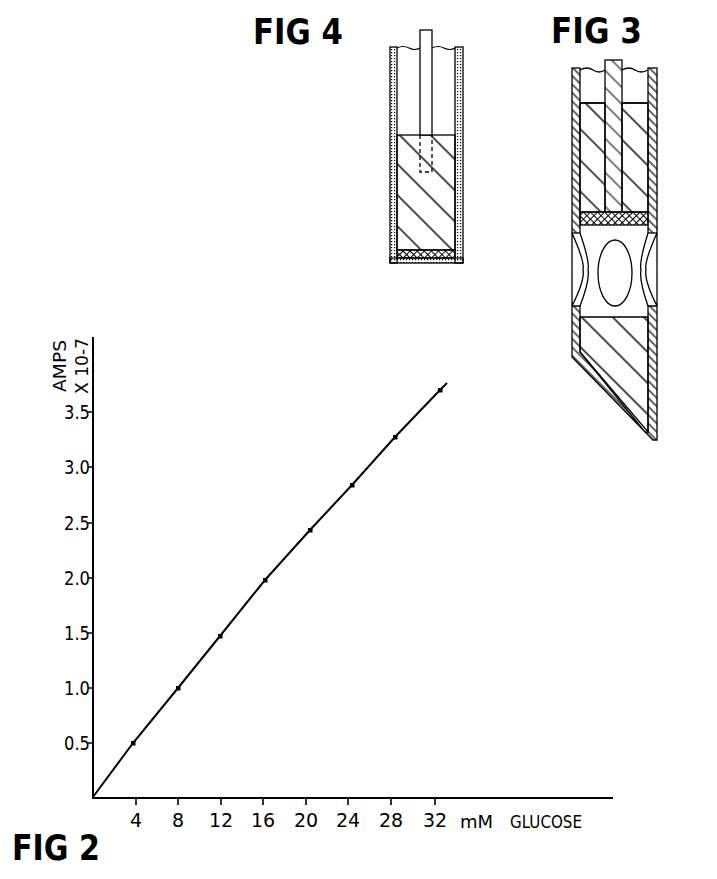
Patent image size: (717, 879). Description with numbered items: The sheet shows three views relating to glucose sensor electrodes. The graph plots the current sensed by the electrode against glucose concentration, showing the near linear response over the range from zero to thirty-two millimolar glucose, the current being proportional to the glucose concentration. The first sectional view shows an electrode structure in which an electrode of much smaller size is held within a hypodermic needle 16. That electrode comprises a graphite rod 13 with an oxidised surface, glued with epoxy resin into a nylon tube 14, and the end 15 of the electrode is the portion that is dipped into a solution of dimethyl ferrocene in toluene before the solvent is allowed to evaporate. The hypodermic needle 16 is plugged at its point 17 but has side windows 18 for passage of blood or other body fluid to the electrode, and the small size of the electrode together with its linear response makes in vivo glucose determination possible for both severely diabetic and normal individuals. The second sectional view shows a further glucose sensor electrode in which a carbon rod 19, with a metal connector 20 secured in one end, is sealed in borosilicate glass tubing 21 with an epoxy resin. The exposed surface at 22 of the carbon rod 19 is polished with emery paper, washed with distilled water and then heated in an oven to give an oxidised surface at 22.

In FIG. 3, the graphite rod 13 is at (618, 82).
In FIG. 3, the nylon tube 14 is at (637, 158).
In FIG. 3, the end of the electrode 15 is at (633, 232).
In FIG. 3, the hypodermic needle 16 is at (565, 83).
In FIG. 3, the point 17 is at (633, 363).
In FIG. 3, the side windows 18 is at (644, 282).
In FIG. 4, the carbon rod 19 is at (433, 218).
In FIG. 4, the metal connector 20 is at (425, 72).
In FIG. 4, the glass tubing 21 is at (463, 133).
In FIG. 4, the exposed surface 22 is at (399, 265).